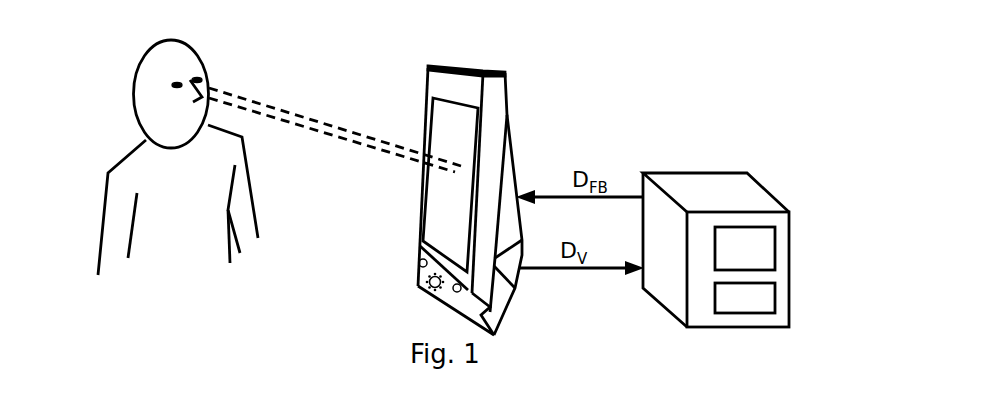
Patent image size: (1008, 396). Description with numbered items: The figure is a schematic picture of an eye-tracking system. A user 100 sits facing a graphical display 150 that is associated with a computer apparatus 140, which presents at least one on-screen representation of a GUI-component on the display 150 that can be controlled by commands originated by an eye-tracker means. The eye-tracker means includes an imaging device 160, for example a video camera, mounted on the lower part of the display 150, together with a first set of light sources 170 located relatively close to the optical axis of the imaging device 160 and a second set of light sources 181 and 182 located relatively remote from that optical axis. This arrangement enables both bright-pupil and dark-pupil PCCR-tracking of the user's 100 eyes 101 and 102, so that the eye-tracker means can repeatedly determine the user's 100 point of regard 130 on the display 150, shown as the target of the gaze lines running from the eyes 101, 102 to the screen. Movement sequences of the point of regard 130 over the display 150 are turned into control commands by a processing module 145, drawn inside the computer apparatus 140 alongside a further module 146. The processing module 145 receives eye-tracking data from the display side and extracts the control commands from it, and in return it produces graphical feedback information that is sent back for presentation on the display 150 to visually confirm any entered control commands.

The user 100 is at (158, 142).
The eye 101 is at (173, 85).
The eye 102 is at (193, 80).
The point of regard 130 is at (417, 182).
The computer apparatus 140 is at (739, 238).
The processing module 145 is at (794, 246).
The memory module 146 is at (794, 293).
The graphical display 150 is at (448, 181).
The imaging device 160 is at (428, 282).
The first set of light sources 170 is at (394, 316).
The second set of light sources 181 is at (384, 249).
The second set of light sources 182 is at (498, 317).